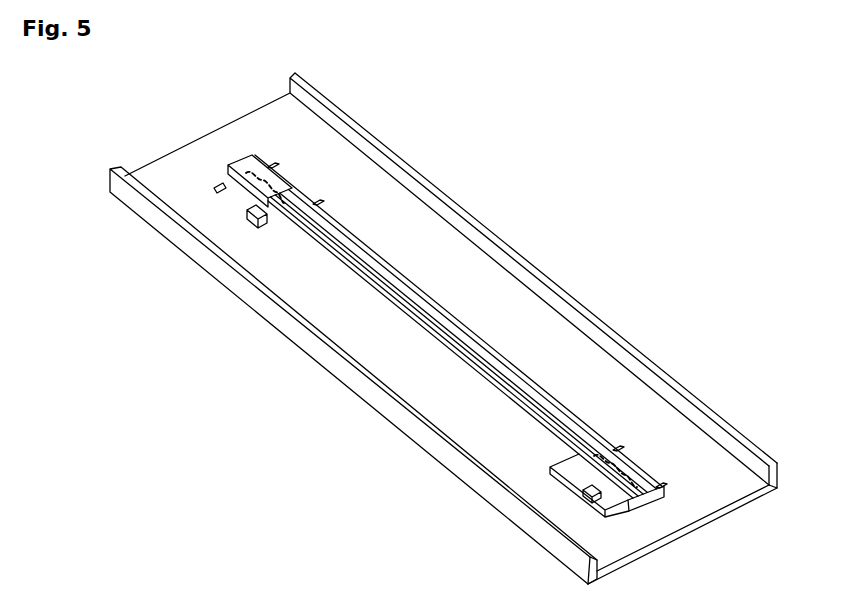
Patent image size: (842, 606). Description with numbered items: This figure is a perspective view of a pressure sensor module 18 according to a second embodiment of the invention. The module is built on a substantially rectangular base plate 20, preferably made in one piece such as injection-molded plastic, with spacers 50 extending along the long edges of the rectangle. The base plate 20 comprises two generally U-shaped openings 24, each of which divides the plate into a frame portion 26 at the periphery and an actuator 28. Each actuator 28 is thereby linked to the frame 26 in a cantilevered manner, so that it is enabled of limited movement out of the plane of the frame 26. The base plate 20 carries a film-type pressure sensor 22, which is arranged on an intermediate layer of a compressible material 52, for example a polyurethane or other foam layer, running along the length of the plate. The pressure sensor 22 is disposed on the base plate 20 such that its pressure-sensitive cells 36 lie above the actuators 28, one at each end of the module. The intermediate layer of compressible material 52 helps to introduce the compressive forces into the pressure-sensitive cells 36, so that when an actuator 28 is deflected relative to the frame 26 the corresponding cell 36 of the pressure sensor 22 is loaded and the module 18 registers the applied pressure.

The pressure sensor module 18 is at (535, 226).
The base plate 20 is at (728, 488).
The pressure sensor 22 is at (483, 353).
The U-shaped opening 24 is at (215, 194).
The frame portion 26 is at (585, 353).
The actuator 28 is at (264, 220).
The pressure-sensitive cell 36 is at (275, 188).
The spacer 50 is at (448, 460).
The intermediate layer of compressible material 52 is at (345, 230).